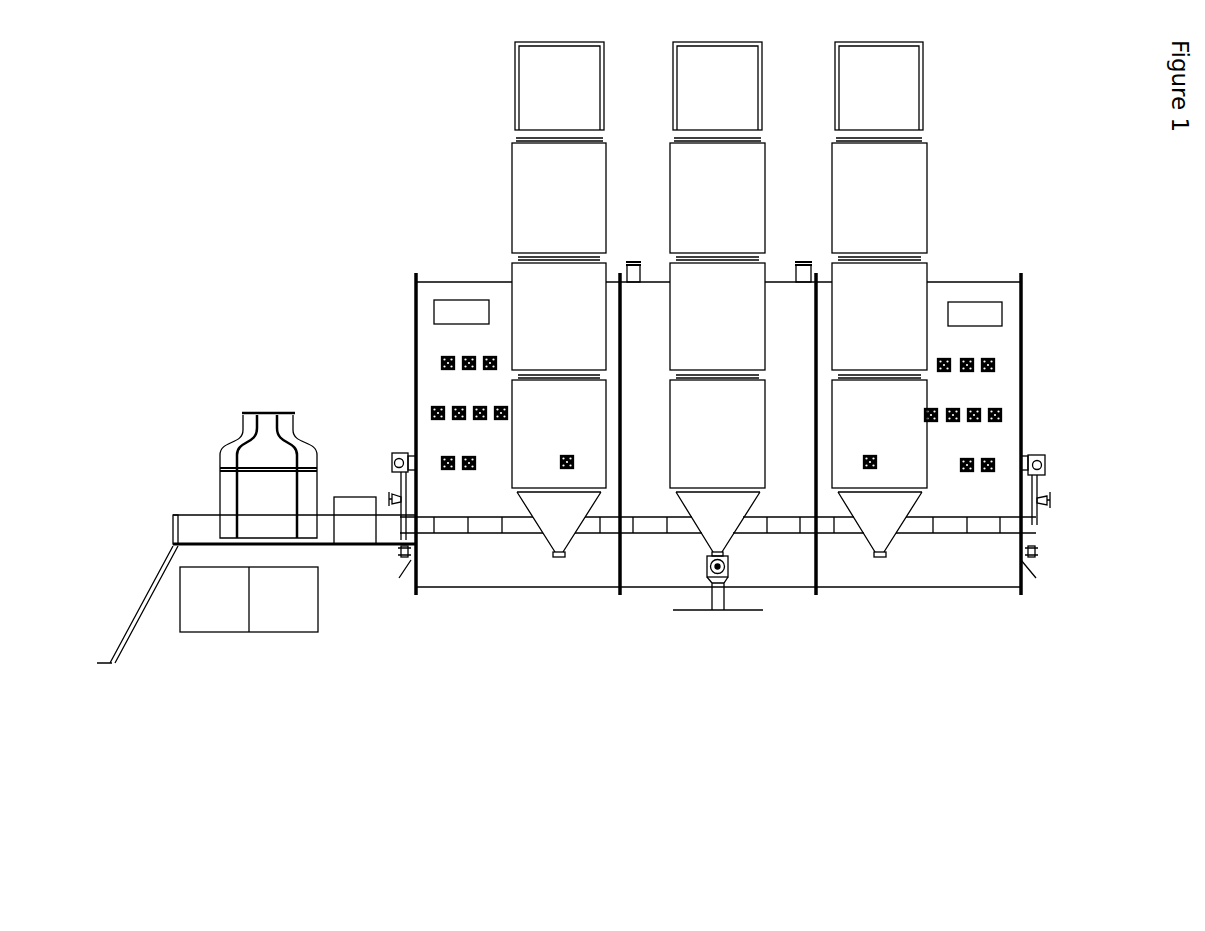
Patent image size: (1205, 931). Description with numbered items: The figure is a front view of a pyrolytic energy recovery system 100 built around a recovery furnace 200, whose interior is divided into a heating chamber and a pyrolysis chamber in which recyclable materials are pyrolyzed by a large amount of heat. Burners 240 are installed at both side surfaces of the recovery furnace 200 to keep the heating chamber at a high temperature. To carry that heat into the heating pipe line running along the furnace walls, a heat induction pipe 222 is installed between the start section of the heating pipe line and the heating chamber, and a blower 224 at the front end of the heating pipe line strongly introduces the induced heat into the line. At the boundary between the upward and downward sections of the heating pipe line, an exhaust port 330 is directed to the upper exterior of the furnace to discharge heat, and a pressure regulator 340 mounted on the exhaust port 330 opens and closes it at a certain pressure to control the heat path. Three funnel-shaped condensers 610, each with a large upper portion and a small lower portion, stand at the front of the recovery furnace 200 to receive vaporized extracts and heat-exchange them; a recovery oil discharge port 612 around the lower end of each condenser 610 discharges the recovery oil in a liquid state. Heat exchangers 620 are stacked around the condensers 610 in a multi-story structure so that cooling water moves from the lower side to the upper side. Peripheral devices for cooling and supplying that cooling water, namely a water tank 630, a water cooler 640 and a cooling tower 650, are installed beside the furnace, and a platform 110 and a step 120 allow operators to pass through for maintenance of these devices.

The pyrolytic energy recovery system 100 is at (247, 148).
The platform 110 is at (492, 534).
The step 120 is at (157, 587).
The recovery furnace 200 is at (985, 278).
The heat induction pipe 222 is at (389, 494).
The blower 224 is at (397, 453).
The burner 240 is at (397, 552).
The exhaust port 330 is at (639, 275).
The pressure regulator 340 is at (629, 262).
The condenser 610 is at (576, 532).
The recovery oil discharge port 612 is at (558, 558).
The heat exchanger 620 is at (526, 290).
The water tank 630 is at (292, 618).
The water cooler 640 is at (346, 505).
The cooling tower 650 is at (250, 455).